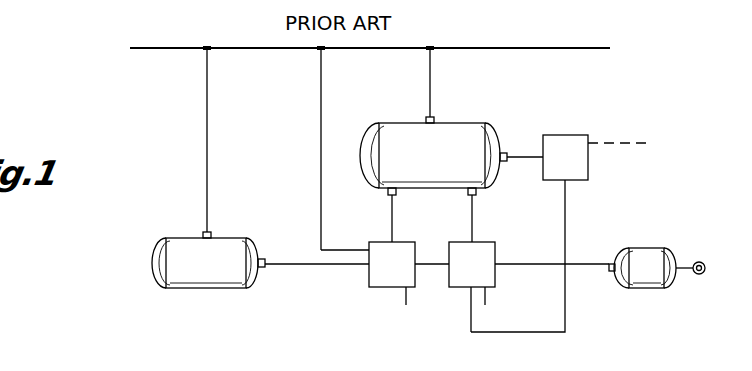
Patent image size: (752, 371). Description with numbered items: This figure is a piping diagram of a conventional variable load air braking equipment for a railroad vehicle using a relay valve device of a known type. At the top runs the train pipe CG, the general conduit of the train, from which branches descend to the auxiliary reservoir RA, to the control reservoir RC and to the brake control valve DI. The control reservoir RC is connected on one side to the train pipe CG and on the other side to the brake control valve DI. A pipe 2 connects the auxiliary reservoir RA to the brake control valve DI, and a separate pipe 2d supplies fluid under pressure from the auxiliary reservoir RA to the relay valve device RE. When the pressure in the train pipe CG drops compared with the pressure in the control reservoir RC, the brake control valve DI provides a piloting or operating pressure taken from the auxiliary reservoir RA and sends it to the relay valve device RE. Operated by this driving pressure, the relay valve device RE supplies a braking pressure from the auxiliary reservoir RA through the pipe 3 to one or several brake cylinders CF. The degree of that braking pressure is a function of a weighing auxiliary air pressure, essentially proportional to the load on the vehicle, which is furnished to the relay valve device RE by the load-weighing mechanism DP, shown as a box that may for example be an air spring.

The train pipe CG is at (507, 40).
The auxiliary reservoir RA is at (450, 114).
The load-weighing mechanism DP is at (562, 127).
The control reservoir RC is at (189, 234).
The brake control valve DI is at (383, 289).
The relay valve device RE is at (484, 234).
The pipe 2 is at (388, 215).
The pipe 2d is at (468, 216).
The pipe 3 is at (579, 267).
The brake cylinder CF is at (637, 240).